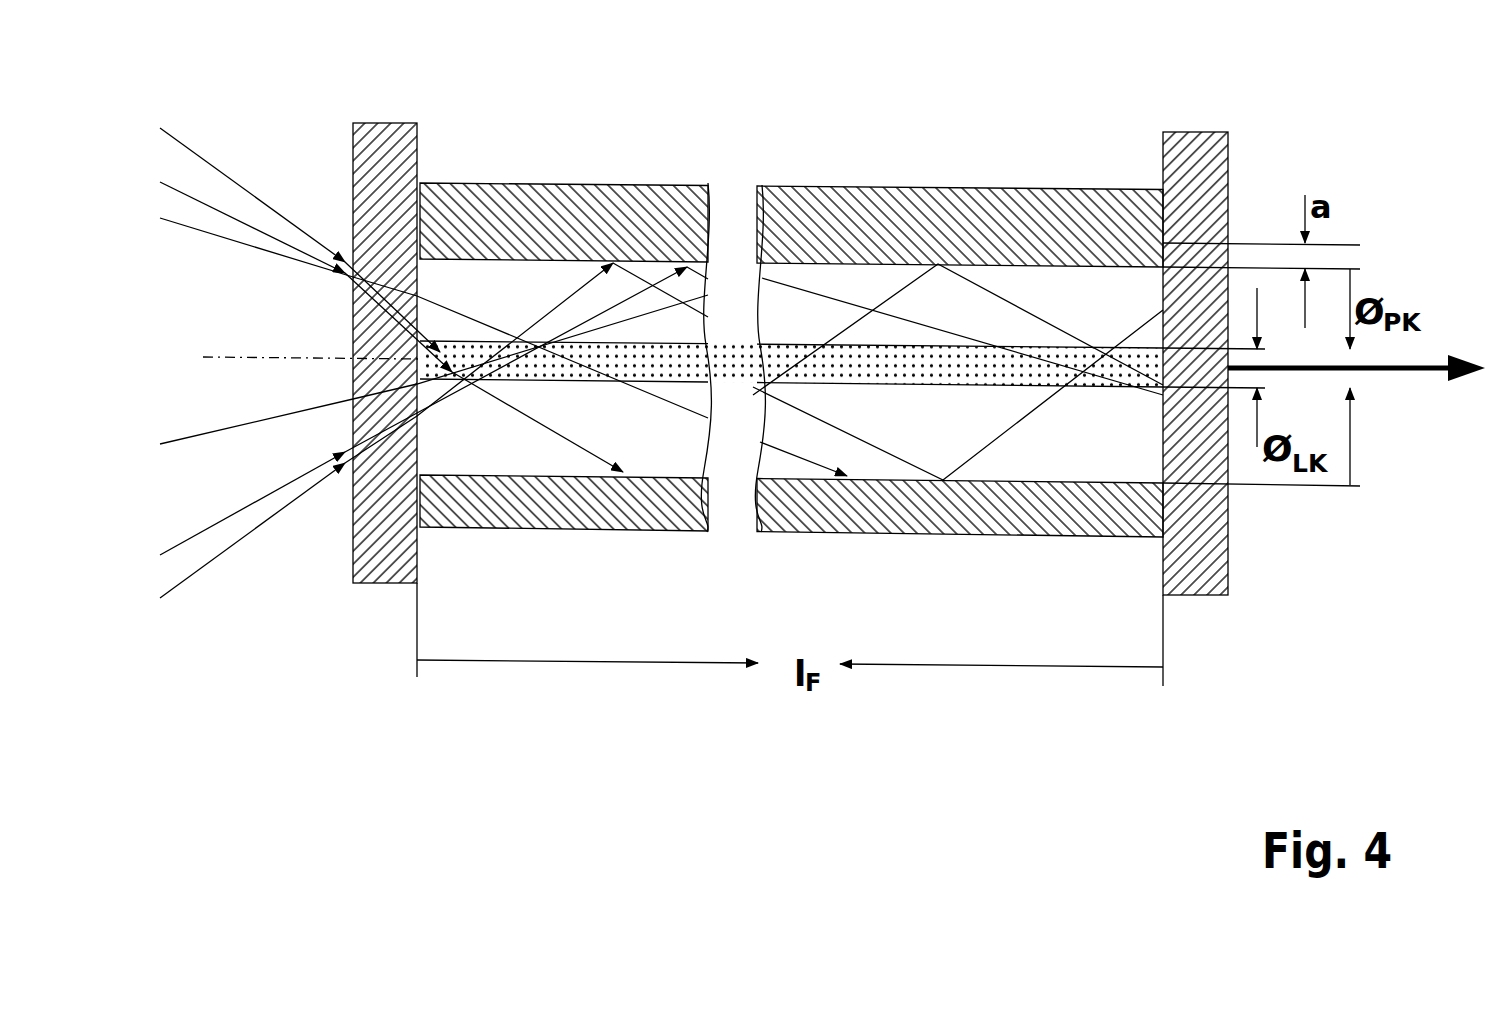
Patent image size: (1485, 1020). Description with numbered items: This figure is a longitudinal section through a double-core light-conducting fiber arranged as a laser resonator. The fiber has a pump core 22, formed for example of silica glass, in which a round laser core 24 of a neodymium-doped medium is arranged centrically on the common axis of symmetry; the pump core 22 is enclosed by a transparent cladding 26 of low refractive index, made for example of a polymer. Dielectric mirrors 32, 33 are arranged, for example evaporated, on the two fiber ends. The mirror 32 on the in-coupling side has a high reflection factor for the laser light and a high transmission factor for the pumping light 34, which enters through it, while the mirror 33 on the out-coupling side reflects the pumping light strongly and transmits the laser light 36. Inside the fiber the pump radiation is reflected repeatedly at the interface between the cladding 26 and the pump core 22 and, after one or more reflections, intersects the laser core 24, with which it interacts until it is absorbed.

The pump core 22 is at (757, 190).
The laser core 24 is at (627, 383).
The cladding 26 is at (840, 188).
The mirror 32 is at (410, 135).
The mirror 33 is at (1220, 160).
The pumping light 34 is at (233, 550).
The laser light 36 is at (1435, 376).